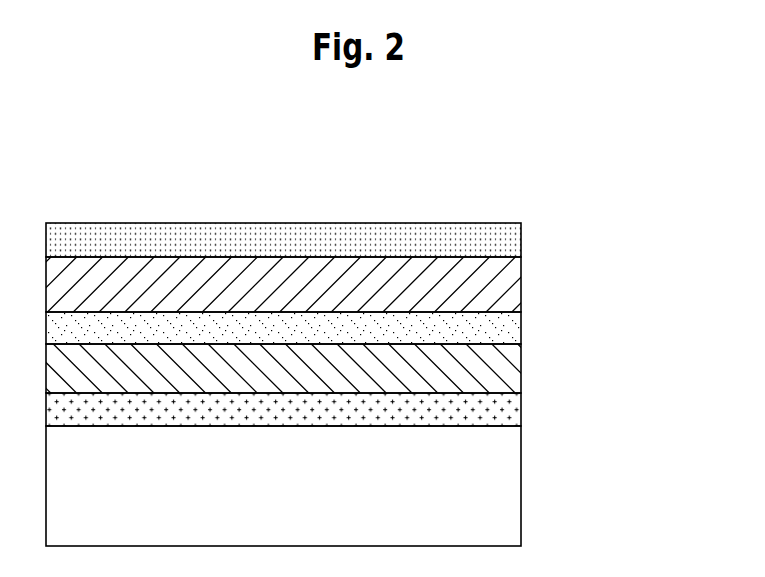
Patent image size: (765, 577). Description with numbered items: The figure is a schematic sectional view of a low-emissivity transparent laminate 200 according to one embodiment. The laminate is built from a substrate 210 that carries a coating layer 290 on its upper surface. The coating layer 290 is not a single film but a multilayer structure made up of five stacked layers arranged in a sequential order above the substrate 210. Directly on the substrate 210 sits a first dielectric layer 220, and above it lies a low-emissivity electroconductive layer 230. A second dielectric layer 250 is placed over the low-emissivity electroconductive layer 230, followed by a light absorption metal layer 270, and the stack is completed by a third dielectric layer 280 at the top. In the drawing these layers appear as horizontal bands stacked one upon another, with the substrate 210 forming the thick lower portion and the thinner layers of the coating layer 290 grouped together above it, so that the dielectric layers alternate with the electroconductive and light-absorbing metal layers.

The low-emissivity transparent laminate 200 is at (341, 325).
The substrate 210 is at (503, 473).
The first dielectric layer 220 is at (331, 410).
The low-emissivity electroconductive layer 230 is at (503, 374).
The second dielectric layer 250 is at (503, 331).
The light absorption metal layer 270 is at (503, 286).
The third dielectric layer 280 is at (505, 241).
The coating layer 290 is at (341, 325).